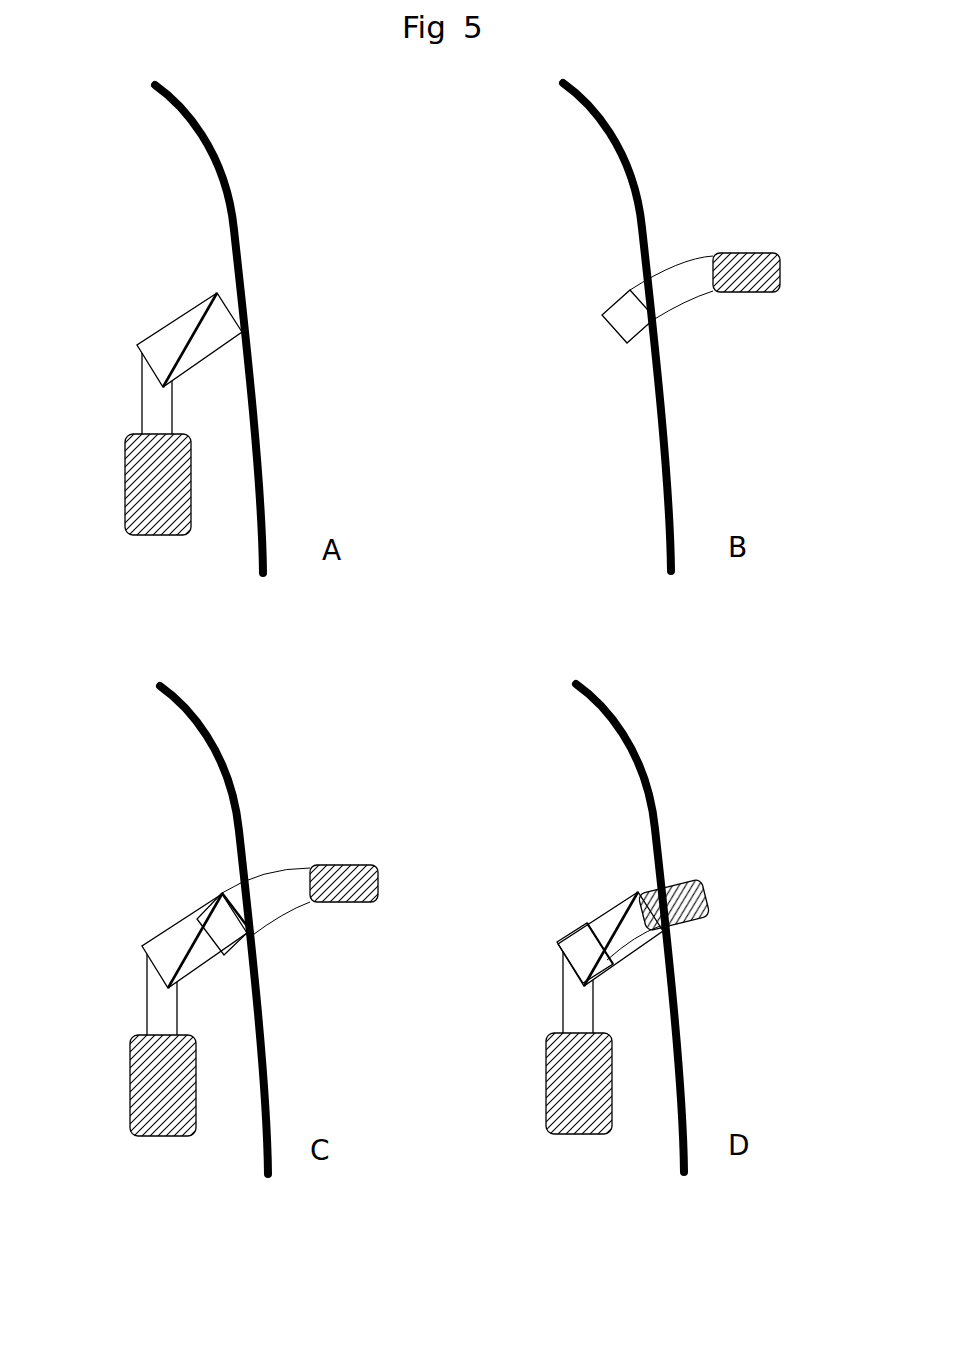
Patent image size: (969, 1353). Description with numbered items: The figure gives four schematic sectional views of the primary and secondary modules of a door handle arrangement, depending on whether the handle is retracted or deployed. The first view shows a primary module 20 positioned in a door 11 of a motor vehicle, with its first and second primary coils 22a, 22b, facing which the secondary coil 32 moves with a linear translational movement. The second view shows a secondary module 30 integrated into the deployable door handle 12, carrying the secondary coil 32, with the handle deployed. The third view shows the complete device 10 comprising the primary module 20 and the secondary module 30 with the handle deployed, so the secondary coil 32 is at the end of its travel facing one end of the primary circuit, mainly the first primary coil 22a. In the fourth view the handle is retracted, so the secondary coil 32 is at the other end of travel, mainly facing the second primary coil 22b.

In FIG. 5C, the device 10 is at (168, 845).
In FIG. 5D, the device 10 is at (585, 842).
In FIG. 5A, the door 11 is at (207, 130).
In FIG. 5B, the door 11 is at (613, 130).
In FIG. 5C, the door 11 is at (211, 734).
In FIG. 5D, the door 11 is at (627, 729).
In FIG. 5B, the deployable door handle 12 is at (750, 292).
In FIG. 5C, the deployable door handle 12 is at (344, 883).
In FIG. 5D, the deployable door handle 12 is at (674, 905).
In FIG. 5A, the primary module 20 is at (108, 423).
In FIG. 5C, the primary module 20 is at (115, 1023).
In FIG. 5D, the primary module 20 is at (530, 1020).
In FIG. 5A, the first primary coil 22a is at (232, 336).
In FIG. 5C, the first primary coil 22a is at (193, 962).
In FIG. 5D, the first primary coil 22a is at (633, 955).
In FIG. 5A, the second primary coil 22b is at (155, 342).
In FIG. 5C, the second primary coil 22b is at (168, 940).
In FIG. 5D, the second primary coil 22b is at (600, 923).
In FIG. 5B, the secondary module 30 is at (730, 217).
In FIG. 5C, the secondary module 30 is at (308, 843).
In FIG. 5D, the secondary module 30 is at (697, 855).
In FIG. 5B, the secondary coil 32 is at (618, 293).
In FIG. 5C, the secondary coil 32 is at (237, 944).
In FIG. 5D, the secondary coil 32 is at (557, 947).